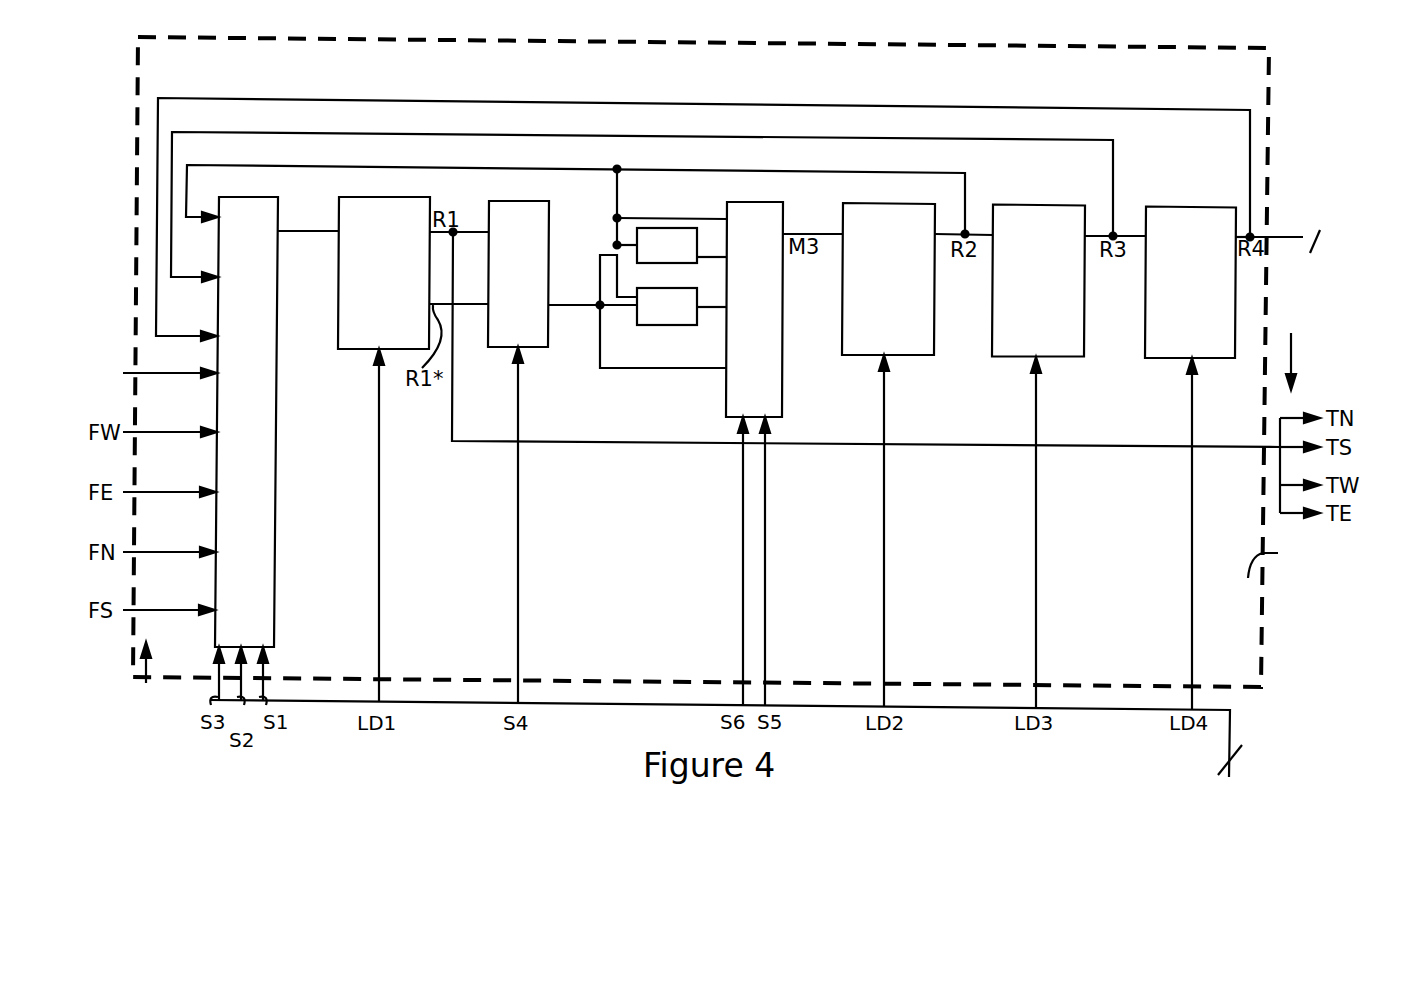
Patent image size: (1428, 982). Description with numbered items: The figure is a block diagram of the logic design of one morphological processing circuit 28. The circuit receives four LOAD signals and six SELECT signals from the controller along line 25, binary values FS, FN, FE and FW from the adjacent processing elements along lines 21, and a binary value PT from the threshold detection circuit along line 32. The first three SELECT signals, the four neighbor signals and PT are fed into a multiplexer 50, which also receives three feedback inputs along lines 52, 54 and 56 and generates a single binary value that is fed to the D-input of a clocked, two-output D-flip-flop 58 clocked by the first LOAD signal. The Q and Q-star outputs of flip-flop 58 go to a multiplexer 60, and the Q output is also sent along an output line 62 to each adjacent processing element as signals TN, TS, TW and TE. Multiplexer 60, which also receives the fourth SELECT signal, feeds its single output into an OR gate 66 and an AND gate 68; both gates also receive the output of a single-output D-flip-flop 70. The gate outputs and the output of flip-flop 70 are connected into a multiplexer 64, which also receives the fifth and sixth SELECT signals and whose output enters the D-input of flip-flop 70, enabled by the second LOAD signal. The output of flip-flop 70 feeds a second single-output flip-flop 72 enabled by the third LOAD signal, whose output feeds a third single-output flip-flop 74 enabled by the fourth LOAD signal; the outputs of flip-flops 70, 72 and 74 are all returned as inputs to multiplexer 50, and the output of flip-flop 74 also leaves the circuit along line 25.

The lines 21 is at (721, 512).
The line 25 is at (1280, 236).
The processing circuit 28 is at (1247, 666).
The line 32 is at (162, 373).
The multiplexer 50 is at (273, 604).
The line 52 is at (397, 98).
The line 54 is at (352, 132).
The line 56 is at (313, 165).
The D-flip-flop 58 is at (340, 336).
The multiplexer 60 is at (492, 344).
The output line 62 is at (626, 442).
The multiplexer 64 is at (729, 412).
The OR gate 66 is at (634, 232).
The AND gate 68 is at (641, 322).
The D-flip-flop 70 is at (848, 357).
The flip-flop 72 is at (998, 358).
The flip-flop 74 is at (1147, 359).